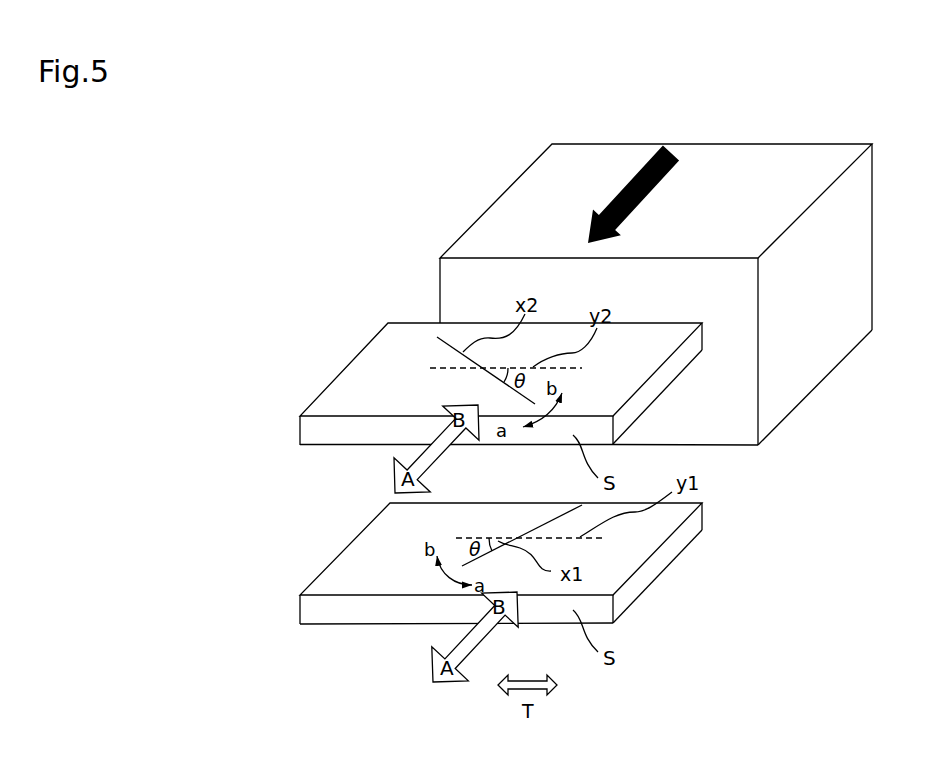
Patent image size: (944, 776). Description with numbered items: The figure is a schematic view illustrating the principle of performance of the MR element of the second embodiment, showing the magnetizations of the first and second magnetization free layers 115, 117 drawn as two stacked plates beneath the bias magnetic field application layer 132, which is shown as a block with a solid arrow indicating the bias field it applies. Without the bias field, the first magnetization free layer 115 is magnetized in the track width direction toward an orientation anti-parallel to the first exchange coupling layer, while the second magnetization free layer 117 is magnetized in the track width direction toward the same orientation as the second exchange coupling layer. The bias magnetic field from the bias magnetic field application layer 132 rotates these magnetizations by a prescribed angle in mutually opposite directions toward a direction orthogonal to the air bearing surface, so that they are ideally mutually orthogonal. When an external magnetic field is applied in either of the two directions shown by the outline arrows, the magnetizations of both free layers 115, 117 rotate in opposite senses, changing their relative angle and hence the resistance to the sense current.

The bias magnetic field application layer 132 is at (500, 197).
The second magnetization free layer 117 is at (356, 358).
The first magnetization free layer 115 is at (357, 537).